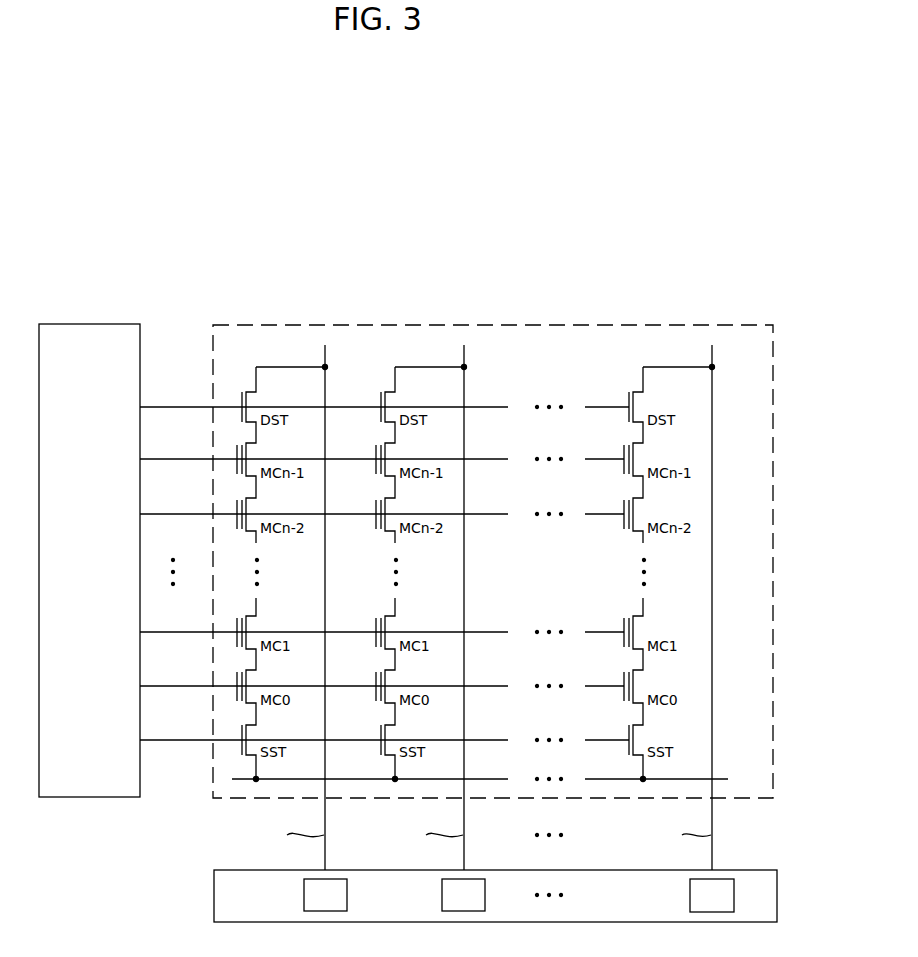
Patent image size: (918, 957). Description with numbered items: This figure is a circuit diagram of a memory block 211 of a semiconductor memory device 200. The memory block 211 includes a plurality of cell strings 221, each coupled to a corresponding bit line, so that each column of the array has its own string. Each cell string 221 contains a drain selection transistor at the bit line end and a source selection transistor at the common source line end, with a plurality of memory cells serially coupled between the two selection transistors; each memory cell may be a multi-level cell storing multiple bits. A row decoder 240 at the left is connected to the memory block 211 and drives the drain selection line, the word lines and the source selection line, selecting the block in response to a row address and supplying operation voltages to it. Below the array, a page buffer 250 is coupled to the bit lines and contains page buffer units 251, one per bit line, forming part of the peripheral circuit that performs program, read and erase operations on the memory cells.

The memory device 200 is at (725, 243).
The memory block 211 is at (679, 323).
The cell string 221 is at (249, 358).
The row decoder 240 is at (90, 323).
The page buffer 250 is at (213, 897).
The page buffer 251 is at (303, 895).